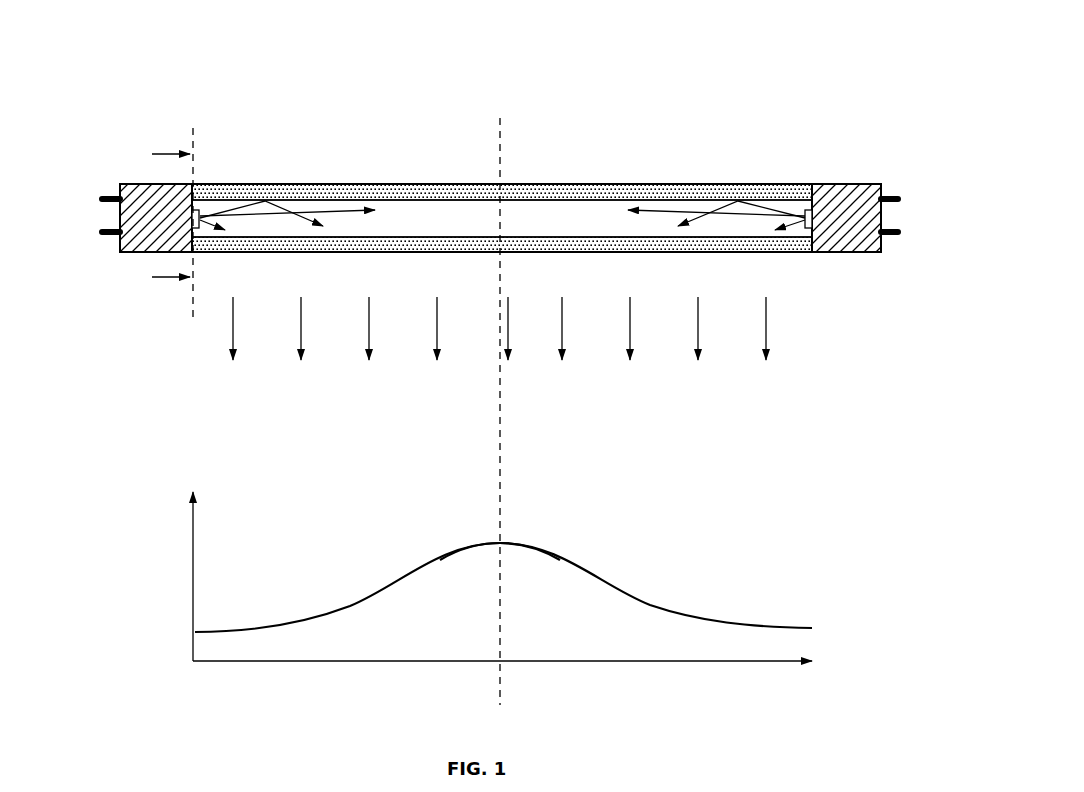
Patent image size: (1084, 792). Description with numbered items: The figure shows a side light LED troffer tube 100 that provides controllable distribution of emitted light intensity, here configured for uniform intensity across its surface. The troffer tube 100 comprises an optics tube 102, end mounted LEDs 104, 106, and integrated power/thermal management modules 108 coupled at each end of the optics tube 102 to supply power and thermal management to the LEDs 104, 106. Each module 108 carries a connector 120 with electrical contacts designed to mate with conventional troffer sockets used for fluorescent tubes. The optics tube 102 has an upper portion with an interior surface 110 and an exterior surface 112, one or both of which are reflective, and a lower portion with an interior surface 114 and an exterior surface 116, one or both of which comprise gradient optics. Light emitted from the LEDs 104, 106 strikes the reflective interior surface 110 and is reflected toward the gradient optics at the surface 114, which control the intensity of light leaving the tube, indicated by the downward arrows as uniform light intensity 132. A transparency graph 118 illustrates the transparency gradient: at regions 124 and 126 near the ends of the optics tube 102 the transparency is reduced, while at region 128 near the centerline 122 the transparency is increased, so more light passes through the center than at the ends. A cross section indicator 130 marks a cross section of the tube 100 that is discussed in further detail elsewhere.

The side light LED troffer tube 100 is at (782, 62).
The optics tube 102 is at (382, 190).
The end mounted LED 104 is at (200, 208).
The end mounted LED 106 is at (803, 210).
The integrated power/thermal management module 108 is at (155, 208).
The interior surface of upper portion 110 is at (485, 197).
The exterior surface of upper portion 112 is at (588, 178).
The interior surface of lower portion 114 is at (528, 237).
The exterior surface of lower portion 116 is at (628, 256).
The transparency graph 118 is at (128, 495).
The connector 120 is at (108, 185).
The centerline 122 is at (498, 490).
The region 124 is at (298, 629).
The region 126 is at (750, 615).
The region 128 is at (535, 537).
The cross section indicator 130 is at (192, 300).
The uniform light intensity 132 is at (340, 383).